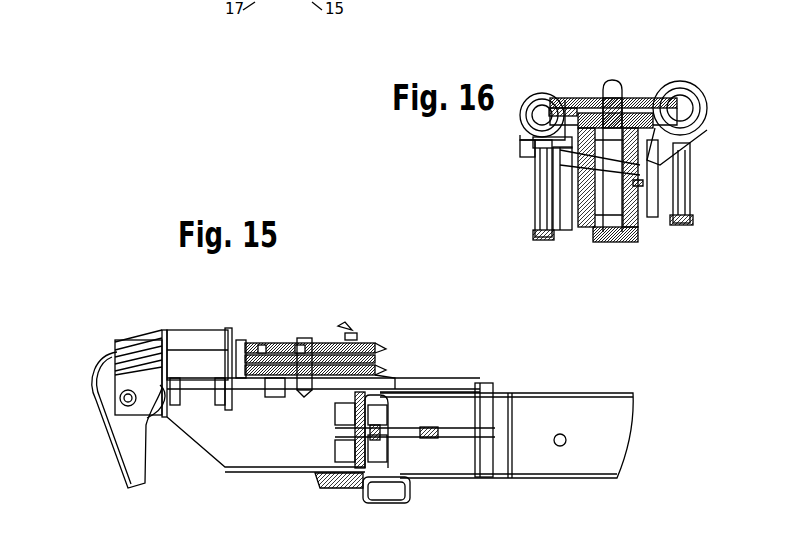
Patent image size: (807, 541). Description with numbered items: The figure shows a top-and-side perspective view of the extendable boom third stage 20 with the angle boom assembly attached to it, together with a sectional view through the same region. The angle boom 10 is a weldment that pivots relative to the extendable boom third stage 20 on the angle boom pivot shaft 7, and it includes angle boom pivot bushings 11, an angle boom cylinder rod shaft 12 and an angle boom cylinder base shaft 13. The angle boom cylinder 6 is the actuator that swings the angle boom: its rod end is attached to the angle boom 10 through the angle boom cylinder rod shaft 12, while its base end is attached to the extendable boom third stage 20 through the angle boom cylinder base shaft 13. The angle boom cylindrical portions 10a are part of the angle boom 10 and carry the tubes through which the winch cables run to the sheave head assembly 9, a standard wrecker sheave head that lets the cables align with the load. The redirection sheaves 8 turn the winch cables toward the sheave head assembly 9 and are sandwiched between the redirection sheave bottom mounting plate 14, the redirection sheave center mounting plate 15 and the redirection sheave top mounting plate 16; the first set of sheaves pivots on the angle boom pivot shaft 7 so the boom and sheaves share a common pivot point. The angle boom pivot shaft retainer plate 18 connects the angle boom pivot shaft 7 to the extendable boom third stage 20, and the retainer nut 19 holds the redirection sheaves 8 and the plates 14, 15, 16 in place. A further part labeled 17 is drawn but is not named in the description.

In FIG. 15, the angle boom cylinder 6 is at (450, 467).
In FIG. 16, the angle boom cylinder 6 is at (577, 207).
In FIG. 15, the angle boom pivot shaft 7 is at (340, 328).
In FIG. 16, the angle boom pivot shaft 7 is at (588, 212).
In FIG. 15, the redirection sheave 8 is at (248, 348).
In FIG. 16, the redirection sheave 8 is at (645, 118).
In FIG. 15, the sheave head assembly 9 is at (100, 363).
In FIG. 16, the sheave head assembly 9 is at (530, 182).
In FIG. 15, the angle boom 10 is at (282, 436).
In FIG. 16, the angle boom 10 is at (700, 83).
In FIG. 15, the angle boom cylindrical portion 10a is at (192, 332).
In FIG. 16, the angle boom pivot bushing 11 is at (633, 205).
In FIG. 16, the angle boom cylinder rod shaft 12 is at (563, 231).
In FIG. 15, the angle boom cylinder base shaft 13 is at (483, 386).
In FIG. 15, the redirection sheave bottom mounting plate 14 is at (392, 372).
In FIG. 16, the redirection sheave bottom mounting plate 14 is at (650, 138).
In FIG. 16, the redirection sheave center mounting plate 15 is at (560, 107).
In FIG. 15, the redirection sheave top mounting plate 16 is at (372, 345).
In FIG. 16, the redirection sheave top mounting plate 16 is at (588, 94).
In FIG. 15, the clip 17 is at (278, 340).
In FIG. 15, the angle boom pivot shaft retainer plate 18 is at (320, 482).
In FIG. 16, the angle boom pivot shaft retainer plate 18 is at (632, 236).
In FIG. 15, the retainer nut 19 is at (352, 338).
In FIG. 16, the retainer nut 19 is at (623, 81).
In FIG. 15, the extendable boom third stage 20 is at (592, 393).
In FIG. 16, the extendable boom third stage 20 is at (633, 228).